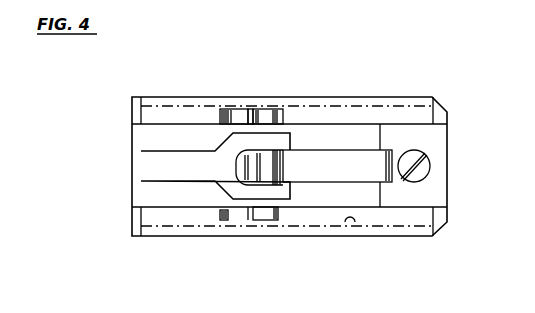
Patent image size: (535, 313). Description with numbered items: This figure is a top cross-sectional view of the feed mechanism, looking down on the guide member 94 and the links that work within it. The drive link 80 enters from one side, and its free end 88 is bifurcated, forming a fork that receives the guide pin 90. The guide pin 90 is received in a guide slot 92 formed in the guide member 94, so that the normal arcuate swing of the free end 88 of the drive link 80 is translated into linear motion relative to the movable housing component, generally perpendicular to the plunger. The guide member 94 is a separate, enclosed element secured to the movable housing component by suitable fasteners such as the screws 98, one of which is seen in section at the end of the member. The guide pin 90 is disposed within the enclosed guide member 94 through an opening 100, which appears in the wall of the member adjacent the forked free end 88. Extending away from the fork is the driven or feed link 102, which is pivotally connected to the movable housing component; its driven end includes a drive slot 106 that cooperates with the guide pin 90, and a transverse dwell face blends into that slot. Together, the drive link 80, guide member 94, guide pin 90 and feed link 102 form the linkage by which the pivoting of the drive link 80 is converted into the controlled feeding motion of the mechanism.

The drive link 80 is at (147, 168).
The free end 88 is at (268, 133).
The guide pin 90 is at (265, 222).
The guide slot 92 is at (355, 223).
The guide member 94 is at (168, 240).
The screws 98 is at (429, 168).
The opening 100 is at (248, 110).
The feed link 102 is at (350, 157).
The drive slot 106 is at (272, 168).